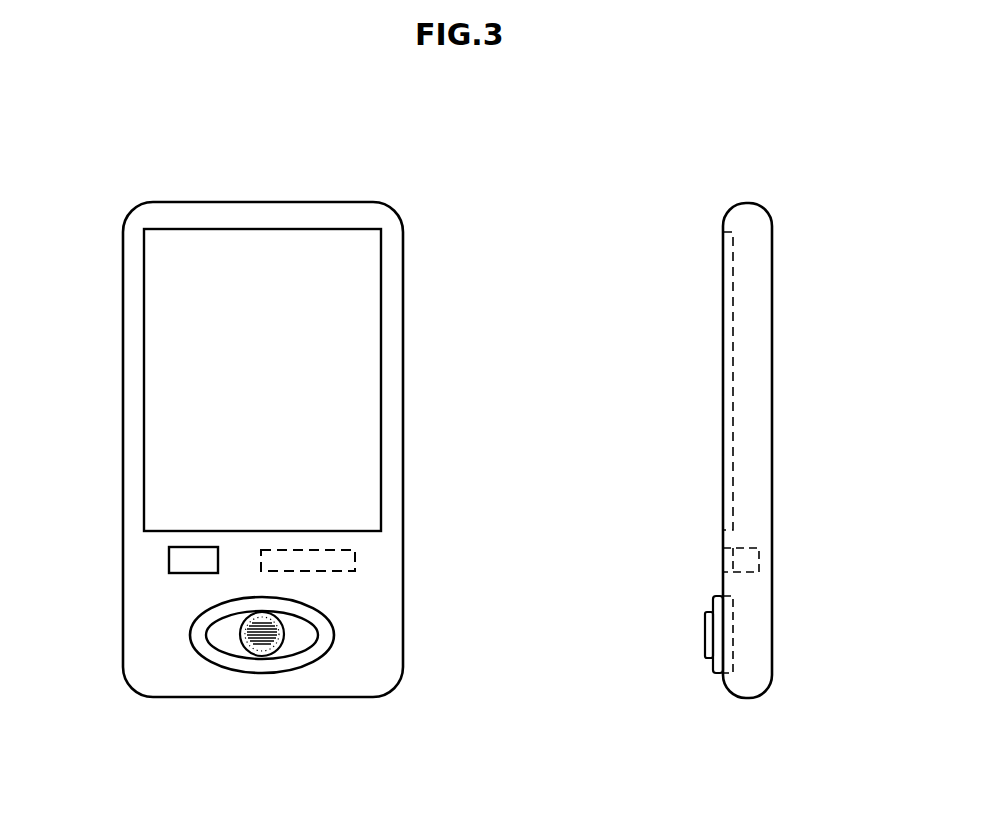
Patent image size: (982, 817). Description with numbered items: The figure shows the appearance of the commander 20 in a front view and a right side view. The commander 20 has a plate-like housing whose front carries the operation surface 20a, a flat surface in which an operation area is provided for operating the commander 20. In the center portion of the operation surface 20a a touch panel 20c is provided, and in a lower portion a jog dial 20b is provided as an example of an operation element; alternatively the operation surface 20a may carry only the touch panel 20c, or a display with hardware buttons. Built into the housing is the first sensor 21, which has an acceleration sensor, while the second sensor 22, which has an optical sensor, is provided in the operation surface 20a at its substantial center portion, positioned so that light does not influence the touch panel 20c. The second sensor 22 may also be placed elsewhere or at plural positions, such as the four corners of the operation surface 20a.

The commander 20 is at (338, 202).
The operation surface 20a is at (393, 541).
The jog dial 20b is at (285, 635).
The touch panel 20c is at (381, 350).
The first sensor 21 is at (355, 560).
The second sensor 22 is at (169, 560).